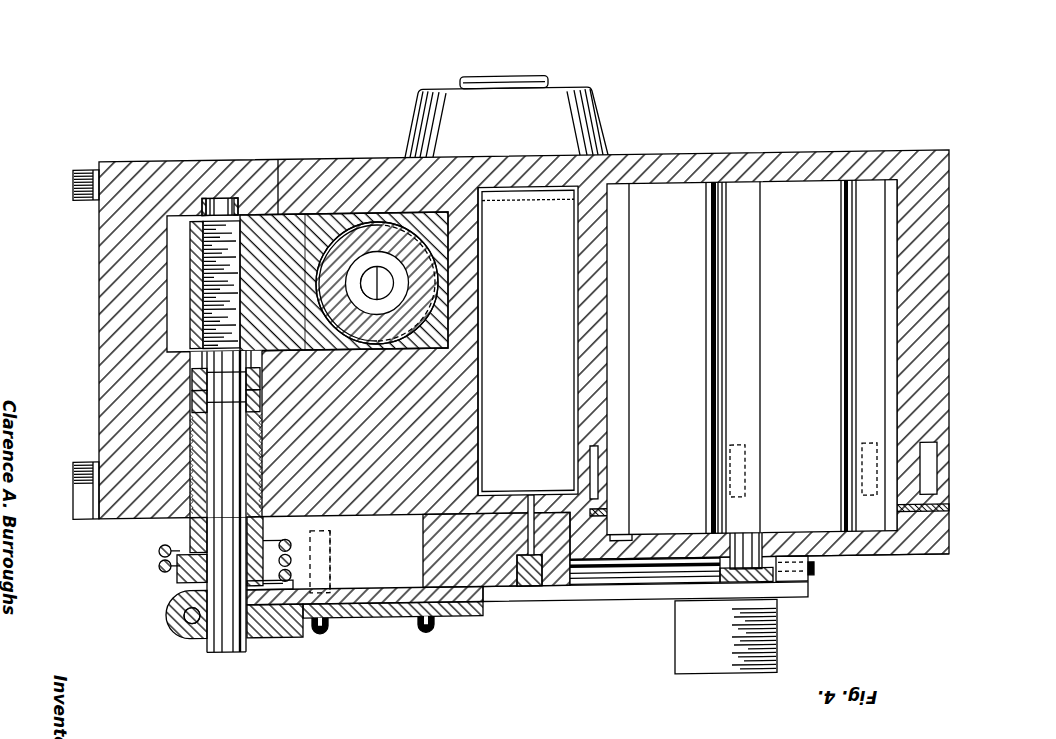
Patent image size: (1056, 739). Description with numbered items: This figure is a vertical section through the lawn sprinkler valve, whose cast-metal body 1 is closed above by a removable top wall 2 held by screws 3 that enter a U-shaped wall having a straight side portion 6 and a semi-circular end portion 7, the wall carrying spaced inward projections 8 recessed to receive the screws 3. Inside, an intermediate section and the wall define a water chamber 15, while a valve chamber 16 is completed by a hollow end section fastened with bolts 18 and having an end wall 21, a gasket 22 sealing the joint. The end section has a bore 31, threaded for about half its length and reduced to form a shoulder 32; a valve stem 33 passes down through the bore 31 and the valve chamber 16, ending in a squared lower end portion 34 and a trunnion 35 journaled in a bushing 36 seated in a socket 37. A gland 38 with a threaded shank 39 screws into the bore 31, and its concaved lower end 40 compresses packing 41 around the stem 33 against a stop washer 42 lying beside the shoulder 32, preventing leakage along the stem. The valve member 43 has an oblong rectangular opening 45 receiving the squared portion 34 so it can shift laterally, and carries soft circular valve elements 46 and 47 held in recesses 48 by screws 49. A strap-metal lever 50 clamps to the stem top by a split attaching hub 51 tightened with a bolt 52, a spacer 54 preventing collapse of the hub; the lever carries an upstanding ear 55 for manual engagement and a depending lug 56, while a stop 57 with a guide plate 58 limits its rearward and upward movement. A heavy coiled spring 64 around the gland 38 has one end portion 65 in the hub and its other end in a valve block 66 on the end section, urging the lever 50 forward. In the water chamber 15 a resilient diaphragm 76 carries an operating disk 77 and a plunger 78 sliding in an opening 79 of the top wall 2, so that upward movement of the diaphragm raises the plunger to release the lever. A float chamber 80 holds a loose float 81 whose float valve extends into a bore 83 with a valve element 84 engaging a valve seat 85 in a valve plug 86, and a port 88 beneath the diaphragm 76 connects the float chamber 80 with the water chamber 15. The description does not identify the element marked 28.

The body 1 is at (98, 276).
The top wall 2 is at (950, 536).
The screws 3 is at (940, 476).
The straight side portion 6 is at (688, 156).
The semi-circular end portion 7 is at (950, 393).
The projections 8 is at (860, 372).
The water chamber 15 is at (795, 186).
The valve chamber 16 is at (443, 122).
The bolts 18 is at (78, 197).
The end wall 21 is at (97, 293).
The gasket 22 is at (279, 209).
The cylinder chamber 28 is at (528, 490).
The bore 31 is at (190, 426).
The shoulder 32 is at (195, 372).
The valve stem 33 is at (192, 243).
The squared lower end portion 34 is at (205, 236).
The trunnion 35 is at (205, 196).
The bushing 36 is at (238, 196).
The socket 37 is at (226, 196).
The gland 38 is at (173, 575).
The threaded shank 39 is at (193, 519).
The concaved lower end 40 is at (200, 413).
The packing 41 is at (193, 389).
The stop washer 42 is at (205, 343).
The valve member 43 is at (305, 209).
The oblong rectangular opening 45 is at (380, 282).
The valve element 46 is at (445, 258).
The valve element 47 is at (490, 213).
The recesses 48 is at (420, 327).
The screws 49 is at (157, 562).
The lever 50 is at (657, 605).
The attaching hub 51 is at (210, 636).
The bolt 52 is at (175, 618).
The spacer 54 is at (253, 635).
The upstanding ear 55 is at (693, 650).
The depending lug 56 is at (807, 588).
The stop 57 is at (347, 603).
The guide plate 58 is at (402, 615).
The coiled spring 64 is at (750, 586).
The end portion 65 is at (287, 636).
The valve block 66 is at (470, 76).
The diaphragm 76 is at (645, 518).
The operating disk 77 is at (655, 548).
The operating plunger 78 is at (790, 504).
The opening 79 is at (830, 561).
The float chamber 80 is at (335, 541).
The float 81 is at (410, 566).
The bore 83 is at (553, 588).
The valve element 84 is at (553, 343).
The valve seat 85 is at (535, 588).
The valve plug 86 is at (517, 600).
The port 88 is at (610, 494).